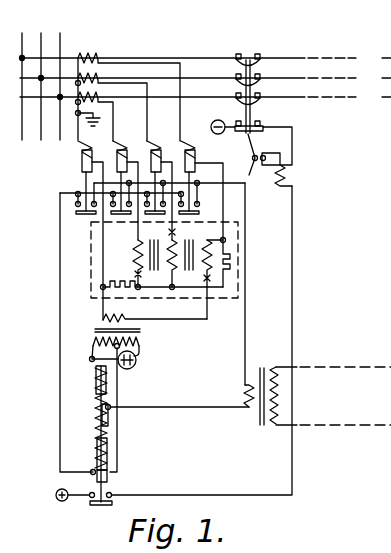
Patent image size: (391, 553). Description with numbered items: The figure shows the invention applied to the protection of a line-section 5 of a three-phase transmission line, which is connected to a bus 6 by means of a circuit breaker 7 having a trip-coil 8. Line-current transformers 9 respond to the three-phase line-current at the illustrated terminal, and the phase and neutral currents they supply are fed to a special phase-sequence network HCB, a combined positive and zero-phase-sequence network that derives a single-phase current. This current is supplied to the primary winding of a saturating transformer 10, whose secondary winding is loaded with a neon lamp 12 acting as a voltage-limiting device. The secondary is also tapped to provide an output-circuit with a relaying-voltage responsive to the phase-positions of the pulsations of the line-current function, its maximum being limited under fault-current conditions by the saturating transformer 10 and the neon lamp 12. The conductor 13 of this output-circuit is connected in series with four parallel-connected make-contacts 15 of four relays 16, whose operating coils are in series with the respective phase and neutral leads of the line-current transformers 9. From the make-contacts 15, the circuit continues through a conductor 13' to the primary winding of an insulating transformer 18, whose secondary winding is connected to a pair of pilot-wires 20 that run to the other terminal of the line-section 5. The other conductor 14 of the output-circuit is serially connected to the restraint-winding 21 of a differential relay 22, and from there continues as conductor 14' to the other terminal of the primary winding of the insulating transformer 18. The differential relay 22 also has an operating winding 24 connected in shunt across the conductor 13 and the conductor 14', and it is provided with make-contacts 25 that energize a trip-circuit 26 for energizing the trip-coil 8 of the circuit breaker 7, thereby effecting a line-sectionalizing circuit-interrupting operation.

The line-section 5 is at (278, 97).
The bus 6 is at (48, 23).
The circuit breaker 7 is at (256, 53).
The trip-coil 8 is at (278, 188).
The line-current transformers 9 is at (95, 49).
The saturating transformer 10 is at (97, 330).
The neon lamp 12 is at (136, 365).
The conductor 13 is at (91, 332).
The conductor 13' is at (265, 284).
The conductor 14 is at (102, 352).
The conductor 14' is at (179, 420).
The make-contacts 15 is at (76, 207).
The relays 16 is at (80, 152).
The insulating transformer 18 is at (266, 427).
The pilot-wires 20 is at (300, 368).
The restraint-winding 21 is at (96, 393).
The differential relay 22 is at (100, 415).
The operating winding 24 is at (96, 447).
The make-contacts 25 is at (90, 498).
The trip-circuit 26 is at (294, 218).
The phase-sequence network HCB is at (240, 265).